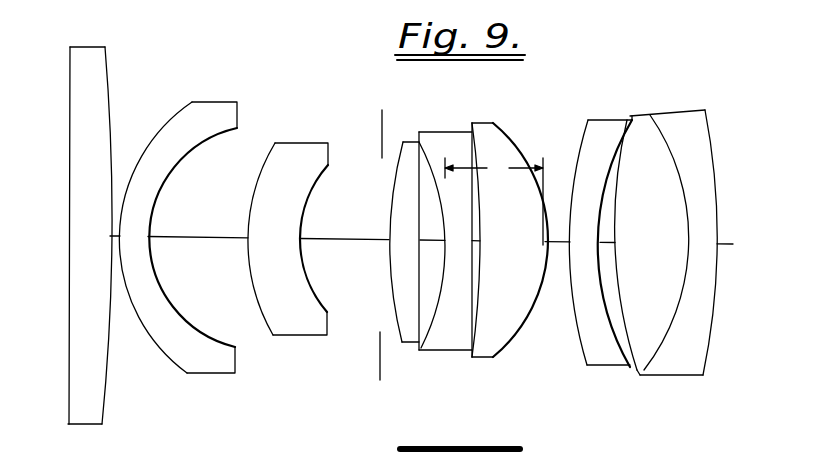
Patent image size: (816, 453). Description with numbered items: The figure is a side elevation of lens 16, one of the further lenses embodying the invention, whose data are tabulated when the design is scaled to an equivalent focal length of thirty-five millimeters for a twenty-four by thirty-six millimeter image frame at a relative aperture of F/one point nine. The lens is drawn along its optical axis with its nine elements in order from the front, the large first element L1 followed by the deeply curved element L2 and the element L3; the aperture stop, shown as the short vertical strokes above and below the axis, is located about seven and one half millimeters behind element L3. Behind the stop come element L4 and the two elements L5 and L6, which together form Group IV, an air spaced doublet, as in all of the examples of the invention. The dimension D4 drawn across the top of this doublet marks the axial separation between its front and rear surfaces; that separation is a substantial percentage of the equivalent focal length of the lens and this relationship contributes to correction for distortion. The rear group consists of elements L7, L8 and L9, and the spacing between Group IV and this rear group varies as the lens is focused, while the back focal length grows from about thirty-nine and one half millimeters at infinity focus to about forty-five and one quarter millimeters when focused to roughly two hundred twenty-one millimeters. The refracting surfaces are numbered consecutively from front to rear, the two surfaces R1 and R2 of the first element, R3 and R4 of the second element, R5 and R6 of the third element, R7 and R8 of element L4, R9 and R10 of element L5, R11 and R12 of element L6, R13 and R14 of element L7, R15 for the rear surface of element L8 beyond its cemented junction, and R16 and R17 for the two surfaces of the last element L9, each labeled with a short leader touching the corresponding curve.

The first lens element L1 is at (93, 216).
The second lens element L2 is at (177, 214).
The lens element L3 is at (275, 214).
The fourth lens element L4 is at (386, 218).
The lens element L5 is at (438, 244).
The lens element L6 is at (516, 229).
The seventh lens element L7 is at (591, 242).
The eighth lens element L8 is at (641, 240).
The ninth lens element L9 is at (692, 241).
The lens 16 is at (738, 121).
The axial separation D4 is at (494, 201).
The lens surface radius R1 is at (72, 350).
The lens surface radius R2 is at (108, 386).
The lens surface radius R3 is at (158, 350).
The lens surface radius R4 is at (193, 322).
The lens surface radius R5 is at (250, 267).
The lens surface radius R6 is at (311, 294).
The lens surface radius R7 is at (391, 287).
The lens surface radius R8 is at (416, 293).
The lens surface radius R9 is at (425, 325).
The lens surface radius R10 is at (470, 312).
The lens surface radius R11 is at (476, 318).
The lens surface radius R12 is at (532, 290).
The lens surface radius R13 is at (576, 325).
The lens surface radius R14 is at (629, 366).
The lens surface radius R15 is at (625, 367).
The lens surface radius R16 is at (660, 347).
The lens surface radius R17 is at (715, 298).